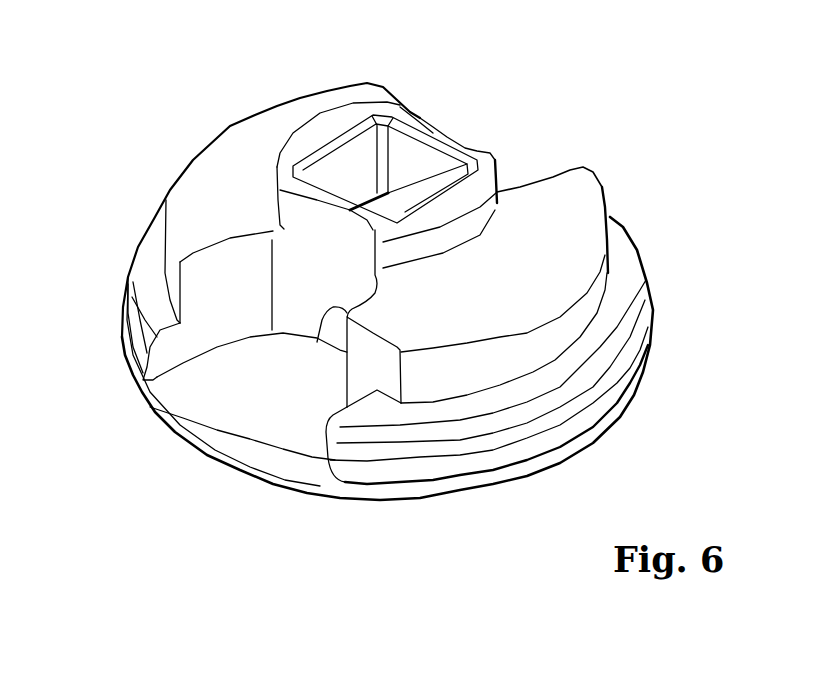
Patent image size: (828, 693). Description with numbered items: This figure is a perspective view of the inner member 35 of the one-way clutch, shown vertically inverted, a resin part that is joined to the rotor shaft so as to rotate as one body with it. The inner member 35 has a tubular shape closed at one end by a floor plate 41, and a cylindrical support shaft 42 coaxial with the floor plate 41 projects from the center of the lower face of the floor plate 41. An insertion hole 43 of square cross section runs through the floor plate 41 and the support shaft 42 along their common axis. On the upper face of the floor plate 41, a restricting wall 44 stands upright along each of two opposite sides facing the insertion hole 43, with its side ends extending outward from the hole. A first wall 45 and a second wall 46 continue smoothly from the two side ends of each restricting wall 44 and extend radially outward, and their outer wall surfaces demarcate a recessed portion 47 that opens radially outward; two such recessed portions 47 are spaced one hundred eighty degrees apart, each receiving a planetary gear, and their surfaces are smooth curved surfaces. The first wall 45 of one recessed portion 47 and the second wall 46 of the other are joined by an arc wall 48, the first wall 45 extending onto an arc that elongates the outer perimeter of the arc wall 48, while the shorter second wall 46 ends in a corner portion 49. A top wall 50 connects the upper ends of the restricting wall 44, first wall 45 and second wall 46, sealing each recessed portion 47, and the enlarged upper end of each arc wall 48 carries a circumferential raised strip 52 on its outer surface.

The inner member 35 is at (590, 77).
The floor plate 41 is at (263, 113).
The support shaft 42 is at (477, 185).
The insertion hole 43 is at (432, 187).
The restricting wall 44 is at (310, 308).
The first wall 45 is at (210, 383).
The second wall 46 is at (322, 322).
The recessed portion 47 is at (287, 305).
The arc wall 48 is at (177, 273).
The corner portion 49 is at (427, 120).
The top wall 50 is at (283, 430).
The raised strip 52 is at (127, 358).